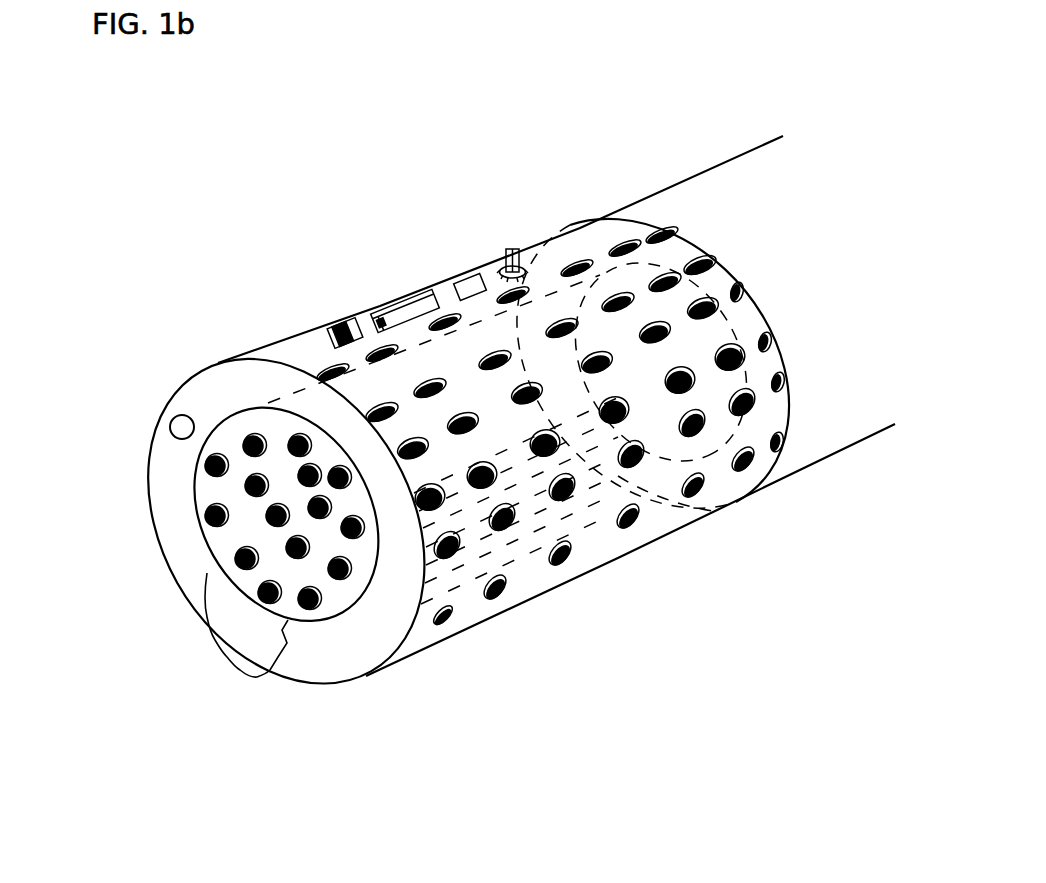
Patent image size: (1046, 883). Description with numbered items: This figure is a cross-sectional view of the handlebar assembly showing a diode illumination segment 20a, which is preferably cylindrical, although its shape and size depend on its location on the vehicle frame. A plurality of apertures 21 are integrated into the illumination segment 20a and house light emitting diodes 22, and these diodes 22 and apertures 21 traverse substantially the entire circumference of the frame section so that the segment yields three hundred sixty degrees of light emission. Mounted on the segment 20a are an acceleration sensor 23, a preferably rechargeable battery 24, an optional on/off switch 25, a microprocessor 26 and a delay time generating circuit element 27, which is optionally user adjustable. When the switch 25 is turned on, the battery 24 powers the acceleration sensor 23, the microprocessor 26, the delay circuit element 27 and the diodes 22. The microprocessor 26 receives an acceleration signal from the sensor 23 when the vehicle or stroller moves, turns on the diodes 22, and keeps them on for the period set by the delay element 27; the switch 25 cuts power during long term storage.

The diode illumination segment 20a is at (259, 347).
The apertures 21 is at (272, 598).
The light emitting diodes 22 is at (247, 562).
The acceleration sensor 23 is at (176, 440).
The battery 24 is at (389, 318).
The on/off switch 25 is at (513, 249).
The microprocessor 26 is at (463, 286).
The delay time generating circuit element 27 is at (336, 322).